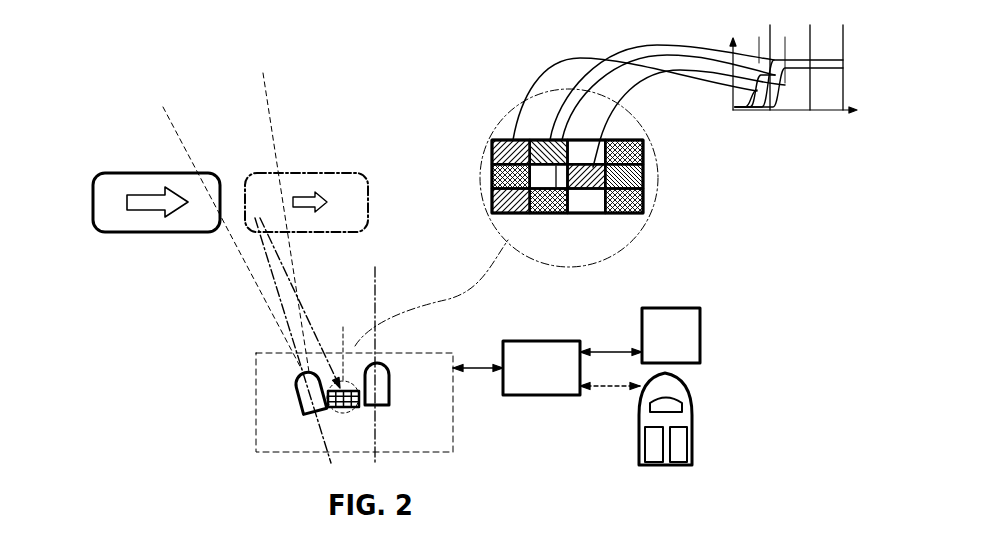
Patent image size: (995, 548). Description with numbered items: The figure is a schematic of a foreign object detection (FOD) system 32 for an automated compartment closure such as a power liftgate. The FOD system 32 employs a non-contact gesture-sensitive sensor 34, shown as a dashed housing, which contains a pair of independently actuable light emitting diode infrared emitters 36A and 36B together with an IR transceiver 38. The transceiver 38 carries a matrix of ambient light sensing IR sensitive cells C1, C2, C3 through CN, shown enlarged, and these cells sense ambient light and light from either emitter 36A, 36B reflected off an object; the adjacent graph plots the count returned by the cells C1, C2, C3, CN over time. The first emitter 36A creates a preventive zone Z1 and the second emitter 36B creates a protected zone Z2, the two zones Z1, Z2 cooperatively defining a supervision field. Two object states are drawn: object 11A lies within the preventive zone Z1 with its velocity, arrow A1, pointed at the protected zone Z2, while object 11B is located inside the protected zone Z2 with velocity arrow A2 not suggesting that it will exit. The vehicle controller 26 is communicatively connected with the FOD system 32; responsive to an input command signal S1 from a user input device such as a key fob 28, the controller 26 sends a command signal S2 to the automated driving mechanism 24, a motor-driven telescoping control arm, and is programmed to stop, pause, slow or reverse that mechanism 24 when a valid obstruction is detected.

The object at time T1 11A is at (145, 195).
The object at time T2 11B is at (330, 169).
The velocity arrow of object 11A A1 is at (134, 211).
The velocity arrow of object 11B A2 is at (308, 192).
The preventive zone Z1 is at (267, 95).
The protected zone Z2 is at (279, 300).
The foreign object detection (FOD) system 32 is at (188, 347).
The non-contact gesture-sensitive sensor 34 is at (256, 390).
The first LED IR emitter 36A is at (304, 412).
The second LED IR emitter 36B is at (387, 406).
The IR transceiver 38 is at (339, 410).
The vehicle controller 26 is at (517, 341).
The automated driving mechanism (motor-driven telescoping control arm) 24 is at (700, 317).
The key fob 28 is at (692, 419).
The input command signal S1 is at (608, 392).
The command signal S2 is at (604, 350).
The first ALS IR sensitive cell C1 is at (513, 213).
The second ALS IR sensitive cell C2 is at (545, 213).
The third ALS IR sensitive cell C3 is at (643, 170).
The N-th ALS IR sensitive cell CN is at (582, 201).